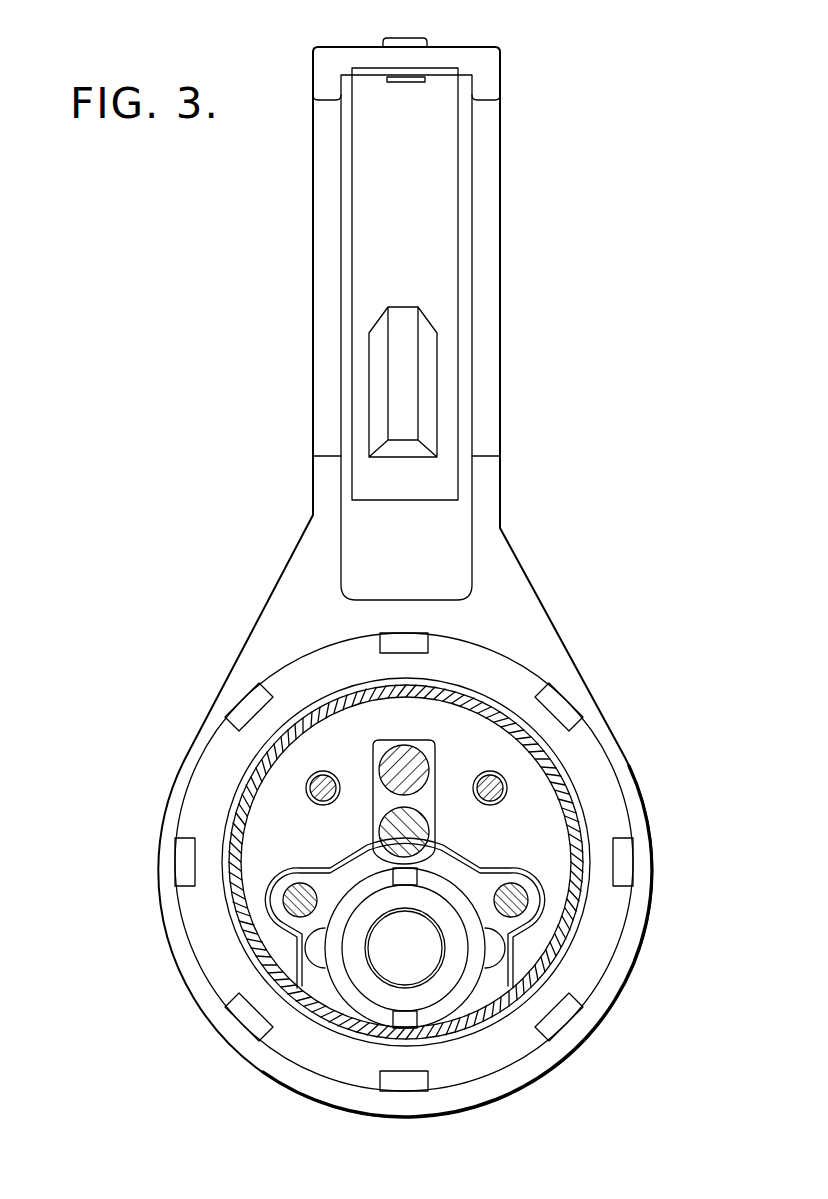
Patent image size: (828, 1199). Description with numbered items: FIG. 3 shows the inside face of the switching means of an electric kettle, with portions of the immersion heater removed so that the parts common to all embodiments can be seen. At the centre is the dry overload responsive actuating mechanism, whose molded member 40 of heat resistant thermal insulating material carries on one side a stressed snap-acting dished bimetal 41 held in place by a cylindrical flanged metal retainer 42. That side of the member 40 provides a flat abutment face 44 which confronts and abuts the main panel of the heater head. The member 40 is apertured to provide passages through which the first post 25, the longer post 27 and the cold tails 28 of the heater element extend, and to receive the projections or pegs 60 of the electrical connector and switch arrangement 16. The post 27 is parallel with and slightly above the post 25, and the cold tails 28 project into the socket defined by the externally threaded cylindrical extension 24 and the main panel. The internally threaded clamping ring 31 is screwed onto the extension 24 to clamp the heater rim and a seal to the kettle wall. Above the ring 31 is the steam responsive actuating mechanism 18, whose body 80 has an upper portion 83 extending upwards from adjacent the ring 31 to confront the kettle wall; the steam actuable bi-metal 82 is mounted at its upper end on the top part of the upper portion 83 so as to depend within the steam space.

The electrical connector and switch arrangement 16 is at (537, 839).
The steam responsive actuating mechanism 18 is at (343, 362).
The externally threaded cylindrical extension 24 is at (470, 698).
The first post 25 is at (408, 830).
The longer post 27 is at (410, 756).
The cold tails 28 is at (323, 779).
The clamping ring 31 is at (583, 969).
The molded member 40 is at (322, 992).
The bimetal 41 is at (437, 987).
The cylindrical flanged metal retainer 42 is at (375, 1013).
The flat abutment face 44 is at (263, 815).
The projections or pegs 60 is at (295, 905).
The body 80 is at (510, 602).
The steam actuable bi-metal 82 is at (428, 390).
The upper portion 83 is at (482, 243).